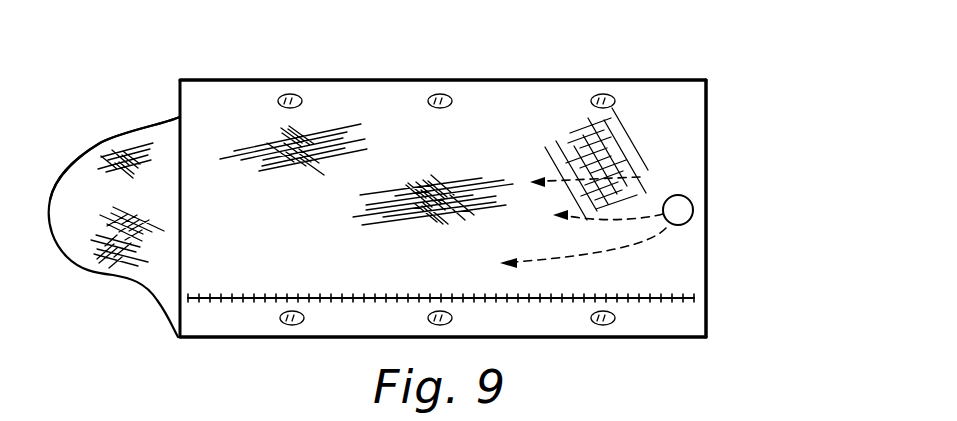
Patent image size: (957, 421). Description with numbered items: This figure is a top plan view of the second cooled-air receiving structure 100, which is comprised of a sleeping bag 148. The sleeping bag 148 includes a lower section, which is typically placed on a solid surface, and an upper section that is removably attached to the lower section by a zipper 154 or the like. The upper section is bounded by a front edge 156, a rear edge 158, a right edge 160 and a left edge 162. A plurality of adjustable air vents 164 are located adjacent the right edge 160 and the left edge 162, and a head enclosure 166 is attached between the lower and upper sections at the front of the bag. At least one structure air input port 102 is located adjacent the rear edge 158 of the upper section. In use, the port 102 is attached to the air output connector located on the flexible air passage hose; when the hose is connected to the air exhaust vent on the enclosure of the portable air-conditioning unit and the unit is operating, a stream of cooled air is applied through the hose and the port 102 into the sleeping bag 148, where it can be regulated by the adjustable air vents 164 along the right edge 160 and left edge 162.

The second cooled-air receiving structure 100 is at (534, 179).
The sleeping bag 148 is at (695, 64).
The structure air input port 102 is at (693, 205).
The zipper 154 is at (650, 296).
The front edge 156 is at (178, 113).
The rear edge 158 is at (706, 103).
The right edge 160 is at (484, 80).
The left edge 162 is at (222, 338).
The adjustable air vents 164 is at (290, 95).
The head enclosure 166 is at (145, 145).